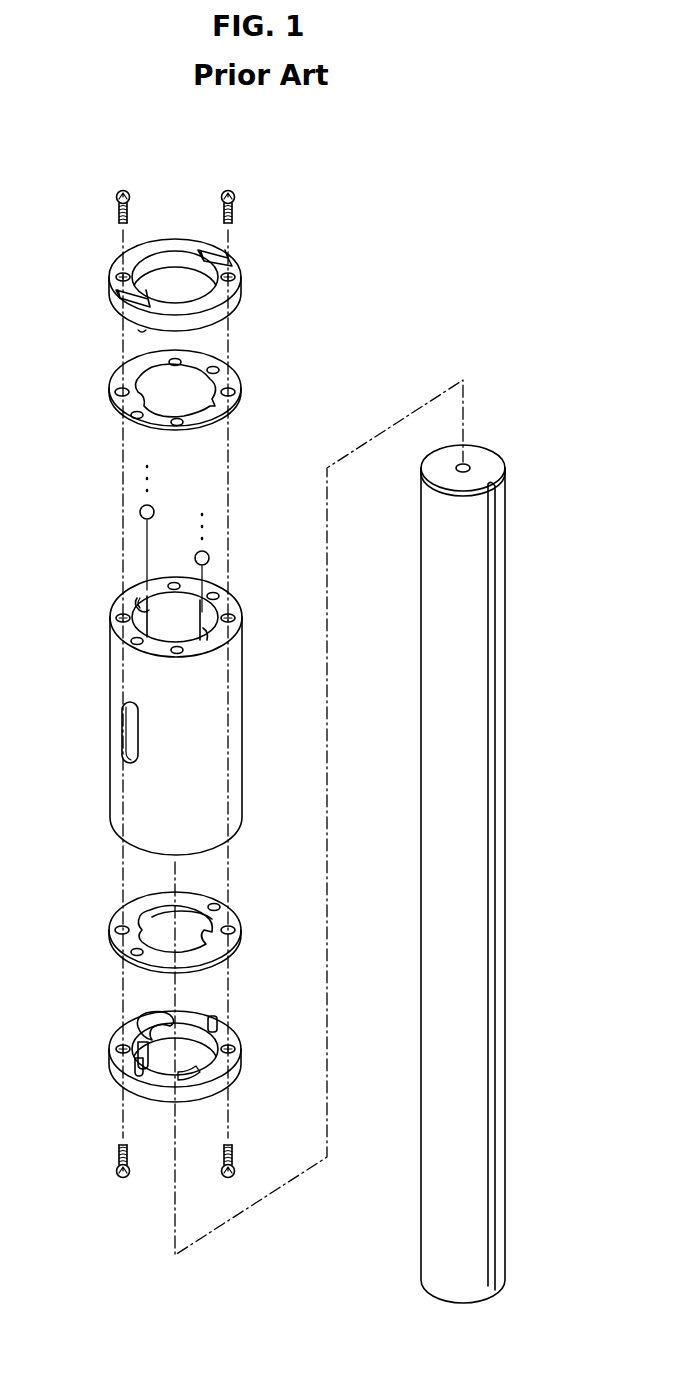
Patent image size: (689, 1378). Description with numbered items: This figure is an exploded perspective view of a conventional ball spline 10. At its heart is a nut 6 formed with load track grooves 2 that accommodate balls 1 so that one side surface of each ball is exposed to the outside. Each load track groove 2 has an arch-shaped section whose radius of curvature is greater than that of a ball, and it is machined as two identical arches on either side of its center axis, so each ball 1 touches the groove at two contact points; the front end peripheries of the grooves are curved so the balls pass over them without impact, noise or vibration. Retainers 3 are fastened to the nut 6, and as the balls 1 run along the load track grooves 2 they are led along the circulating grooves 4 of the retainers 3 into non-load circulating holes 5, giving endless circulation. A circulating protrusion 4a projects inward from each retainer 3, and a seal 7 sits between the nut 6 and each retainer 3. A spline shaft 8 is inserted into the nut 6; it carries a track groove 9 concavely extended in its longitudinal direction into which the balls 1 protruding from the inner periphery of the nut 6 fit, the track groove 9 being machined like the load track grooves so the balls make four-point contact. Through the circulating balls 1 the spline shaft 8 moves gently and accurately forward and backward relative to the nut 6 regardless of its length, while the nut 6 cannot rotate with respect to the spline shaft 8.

The ball 1 is at (140, 511).
The load track groove 2 is at (136, 593).
The retainer 3 is at (220, 293).
The circulating groove 4 is at (142, 1023).
The circulating protrusion 4a is at (137, 1065).
The non-load circulating hole 5 is at (168, 583).
The nut 6 is at (100, 690).
The seal 7 is at (116, 942).
The spline shaft 8 is at (438, 600).
The track groove 9 is at (496, 651).
The ball spline 10 is at (399, 222).